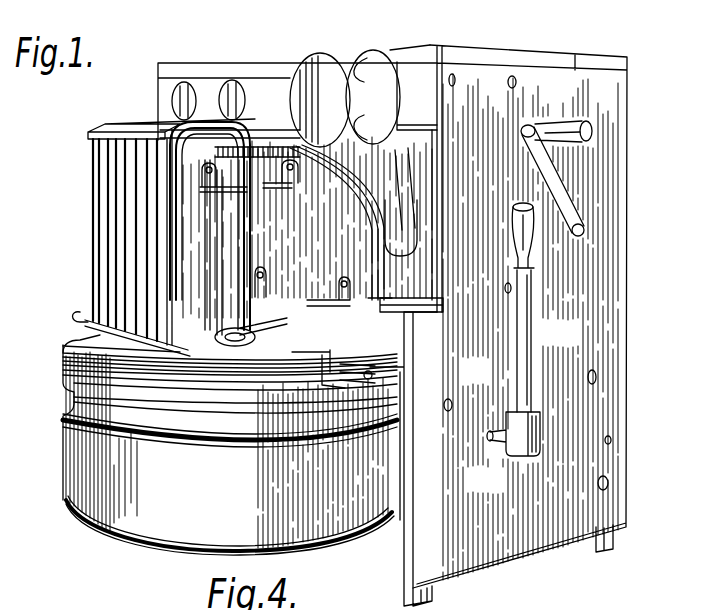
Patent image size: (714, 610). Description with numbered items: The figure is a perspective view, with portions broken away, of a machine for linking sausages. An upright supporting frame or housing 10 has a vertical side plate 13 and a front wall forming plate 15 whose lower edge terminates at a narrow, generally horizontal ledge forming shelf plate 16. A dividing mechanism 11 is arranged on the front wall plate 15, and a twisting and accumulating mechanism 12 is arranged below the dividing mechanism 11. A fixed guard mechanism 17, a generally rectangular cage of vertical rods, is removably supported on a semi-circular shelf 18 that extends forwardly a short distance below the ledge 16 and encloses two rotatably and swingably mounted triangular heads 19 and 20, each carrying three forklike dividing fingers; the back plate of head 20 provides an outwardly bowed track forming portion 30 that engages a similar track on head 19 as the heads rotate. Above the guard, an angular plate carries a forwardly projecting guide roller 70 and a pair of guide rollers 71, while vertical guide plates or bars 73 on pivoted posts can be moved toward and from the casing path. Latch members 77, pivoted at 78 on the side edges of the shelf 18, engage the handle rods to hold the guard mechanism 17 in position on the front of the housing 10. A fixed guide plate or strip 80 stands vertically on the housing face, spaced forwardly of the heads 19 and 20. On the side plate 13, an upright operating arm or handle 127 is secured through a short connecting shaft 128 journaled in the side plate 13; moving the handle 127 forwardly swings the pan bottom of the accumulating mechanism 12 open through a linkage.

The supporting frame or housing 10 is at (623, 317).
The dividing mechanism 11 is at (88, 227).
The twisting and accumulating mechanism 12 is at (62, 423).
The side wall or plate member 13 is at (486, 381).
The front wall forming plate 15 is at (424, 176).
The ledge forming shelf plate 16 is at (397, 300).
The fixed guard mechanism 17 is at (98, 268).
The semi-circular shelf 18 is at (62, 352).
The triangular head 19 is at (299, 247).
The triangular head 20 is at (205, 256).
The track forming portion 30 is at (363, 223).
The guide roller 70 is at (358, 60).
The guide rollers 71 is at (242, 75).
The guide plates or bars 73 is at (215, 248).
The latch members 77 is at (76, 315).
The pivot 78 is at (370, 364).
The fixed guide plate or strip 80 is at (250, 189).
The operating arm or handle 127 is at (518, 333).
The connecting shaft 128 is at (498, 440).